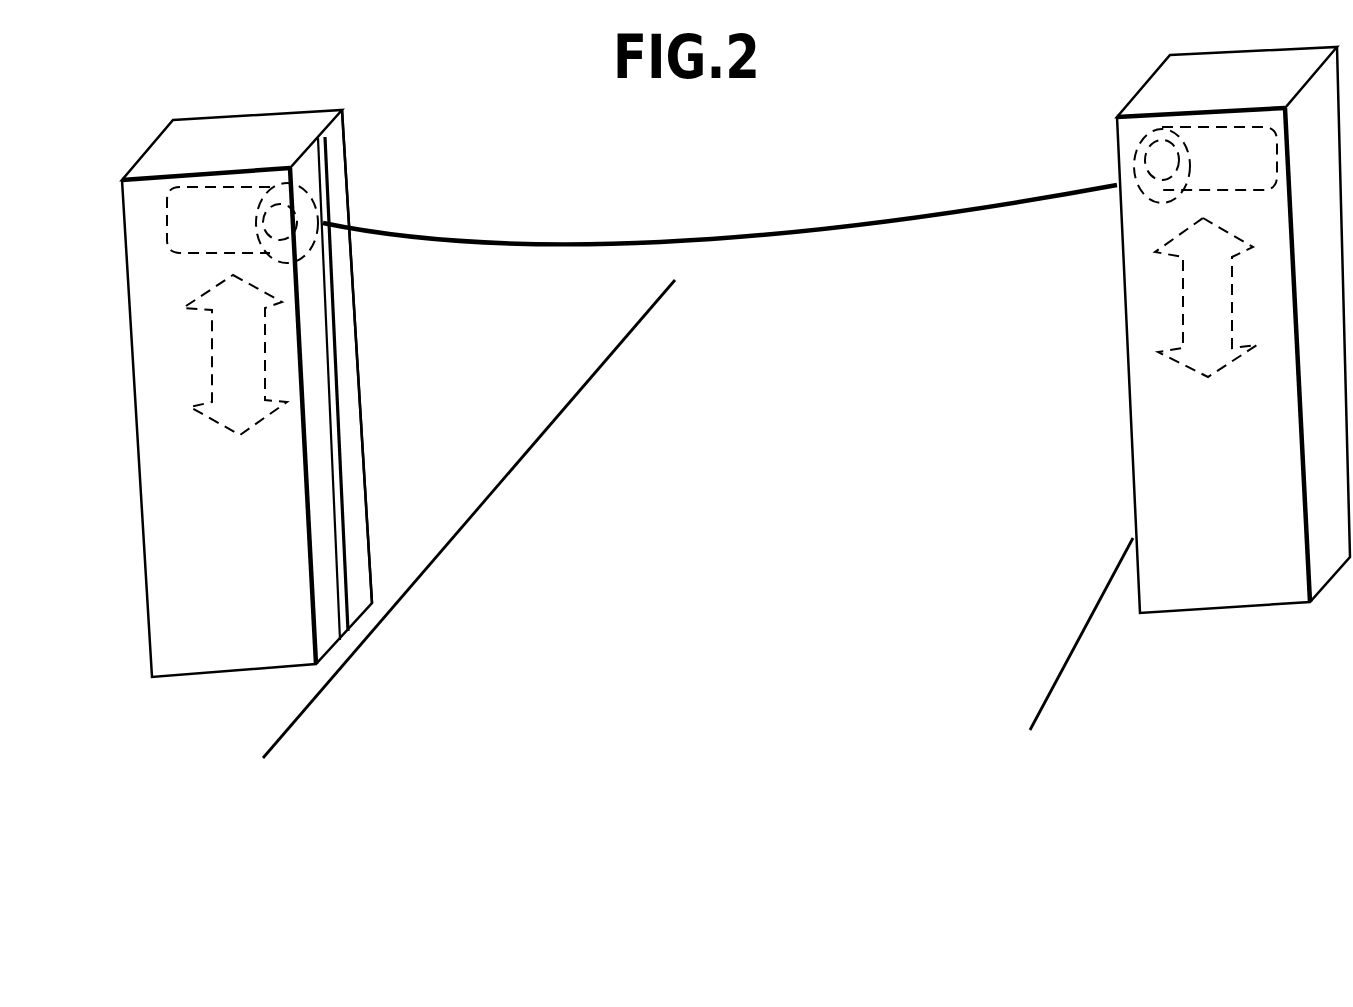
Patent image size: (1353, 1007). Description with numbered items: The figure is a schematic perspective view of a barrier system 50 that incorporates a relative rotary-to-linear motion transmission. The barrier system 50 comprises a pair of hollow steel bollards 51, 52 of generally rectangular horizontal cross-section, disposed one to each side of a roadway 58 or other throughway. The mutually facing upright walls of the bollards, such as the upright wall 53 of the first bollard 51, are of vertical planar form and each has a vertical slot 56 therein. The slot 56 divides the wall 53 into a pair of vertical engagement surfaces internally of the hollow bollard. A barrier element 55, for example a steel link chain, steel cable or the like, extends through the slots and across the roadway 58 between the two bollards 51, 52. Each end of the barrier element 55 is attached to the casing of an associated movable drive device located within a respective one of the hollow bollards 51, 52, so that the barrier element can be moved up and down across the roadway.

The barrier system 50 is at (367, 138).
The hollow steel bollard 51 is at (352, 295).
The hollow steel bollard 52 is at (1128, 452).
The upright wall 53 is at (353, 358).
The barrier element 55 is at (765, 235).
The vertical slot 56 is at (338, 417).
The roadway 58 is at (533, 433).